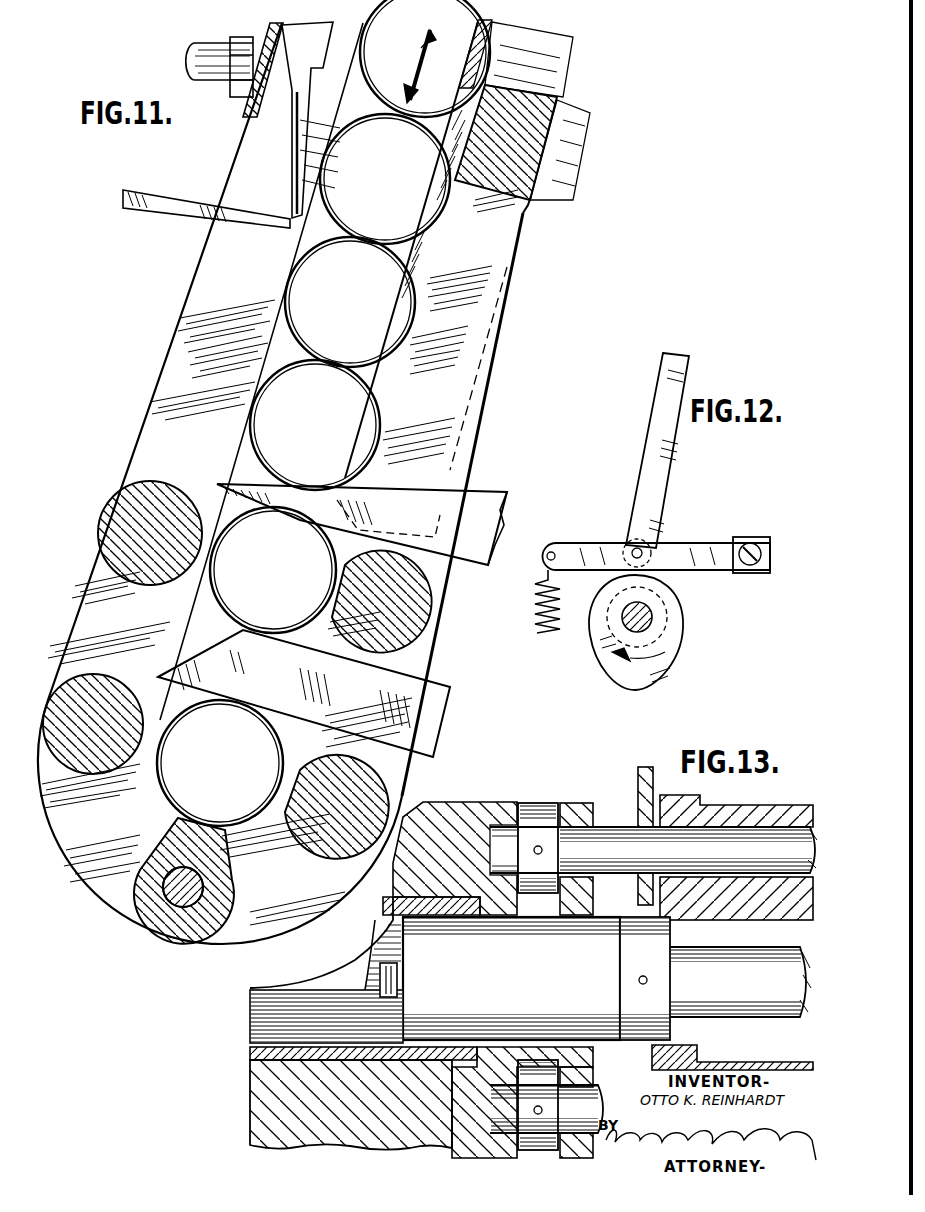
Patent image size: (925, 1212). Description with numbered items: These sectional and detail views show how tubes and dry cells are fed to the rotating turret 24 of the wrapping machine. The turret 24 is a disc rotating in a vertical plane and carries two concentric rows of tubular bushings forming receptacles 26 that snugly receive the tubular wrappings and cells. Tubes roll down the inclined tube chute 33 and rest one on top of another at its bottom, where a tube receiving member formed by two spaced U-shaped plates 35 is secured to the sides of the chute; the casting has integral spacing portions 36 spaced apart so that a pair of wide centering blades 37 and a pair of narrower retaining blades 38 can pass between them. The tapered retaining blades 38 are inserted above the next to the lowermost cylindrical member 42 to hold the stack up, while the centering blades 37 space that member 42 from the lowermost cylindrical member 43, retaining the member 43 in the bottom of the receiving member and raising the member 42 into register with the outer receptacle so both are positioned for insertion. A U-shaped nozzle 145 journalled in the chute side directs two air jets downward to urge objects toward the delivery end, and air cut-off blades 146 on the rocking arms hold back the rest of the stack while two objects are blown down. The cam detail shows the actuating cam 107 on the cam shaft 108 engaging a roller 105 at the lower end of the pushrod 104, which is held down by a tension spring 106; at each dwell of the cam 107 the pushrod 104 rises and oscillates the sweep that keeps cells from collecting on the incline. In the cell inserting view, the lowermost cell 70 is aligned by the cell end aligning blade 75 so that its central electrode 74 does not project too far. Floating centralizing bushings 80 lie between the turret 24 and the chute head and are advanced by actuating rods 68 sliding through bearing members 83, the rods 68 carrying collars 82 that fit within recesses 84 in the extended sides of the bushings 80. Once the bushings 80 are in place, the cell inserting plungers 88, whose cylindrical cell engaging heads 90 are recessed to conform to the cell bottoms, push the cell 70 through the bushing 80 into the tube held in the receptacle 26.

In FIG. 13, the turret 24 is at (265, 1109).
In FIG. 13, the receptacles 26 is at (280, 1050).
In FIG. 11, the tube chute 33 is at (162, 307).
In FIG. 11, the U-shaped plates 35 is at (478, 406).
In FIG. 11, the spacing portions 36 is at (137, 580).
In FIG. 11, the centering blades 37 is at (227, 670).
In FIG. 11, the retaining blades 38 is at (240, 466).
In FIG. 11, the next to the lowermost cylindrical member 42 is at (245, 512).
In FIG. 11, the lowermost cylindrical member 43 is at (190, 713).
In FIG. 13, the lowermost cylindrical member 43 is at (275, 1012).
In FIG. 13, the actuating rods 68 is at (608, 840).
In FIG. 13, the lowermost cell 70 is at (430, 955).
In FIG. 13, the central electrodes 74 is at (385, 992).
In FIG. 13, the cell end aligning blade 75 is at (645, 890).
In FIG. 13, the floating centralizing bushings 80 is at (483, 900).
In FIG. 13, the collars 82 is at (541, 815).
In FIG. 13, the bearing members 83 is at (754, 806).
In FIG. 13, the recesses 84 is at (558, 810).
In FIG. 13, the cell inserting plungers 88 is at (767, 960).
In FIG. 13, the cell engaging heads 90 is at (658, 942).
In FIG. 12, the pushrod 104 is at (652, 461).
In FIG. 12, the roller 105 is at (624, 541).
In FIG. 12, the tension spring 106 is at (542, 606).
In FIG. 12, the actuating cam 107 is at (603, 650).
In FIG. 12, the cam shaft 108 is at (655, 617).
In FIG. 11, the U-shaped nozzle 145 is at (297, 197).
In FIG. 11, the air cut-off blades 146 is at (218, 219).